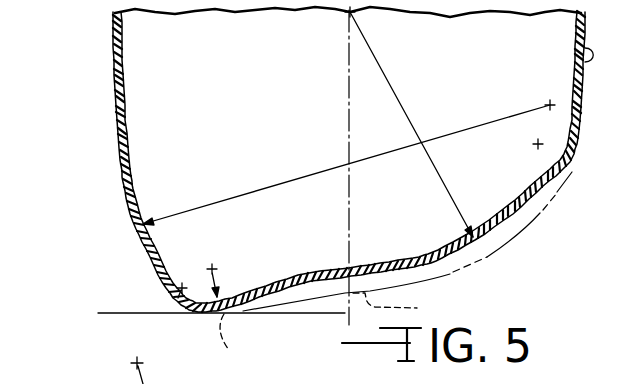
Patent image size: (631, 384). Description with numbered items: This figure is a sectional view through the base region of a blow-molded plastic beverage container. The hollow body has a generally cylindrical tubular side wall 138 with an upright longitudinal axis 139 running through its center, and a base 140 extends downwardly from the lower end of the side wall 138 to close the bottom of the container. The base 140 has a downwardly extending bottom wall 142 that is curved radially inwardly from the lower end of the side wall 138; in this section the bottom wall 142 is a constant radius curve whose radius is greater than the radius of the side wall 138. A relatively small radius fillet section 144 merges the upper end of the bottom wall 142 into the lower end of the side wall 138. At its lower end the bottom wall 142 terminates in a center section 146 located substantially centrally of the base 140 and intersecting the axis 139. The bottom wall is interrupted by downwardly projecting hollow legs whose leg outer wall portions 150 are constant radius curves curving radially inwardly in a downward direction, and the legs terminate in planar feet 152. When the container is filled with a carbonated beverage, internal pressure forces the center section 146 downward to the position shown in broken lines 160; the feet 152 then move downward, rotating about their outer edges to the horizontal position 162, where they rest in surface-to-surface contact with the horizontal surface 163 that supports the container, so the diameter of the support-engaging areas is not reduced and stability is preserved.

The tubular side wall 138 is at (114, 107).
The longitudinal axis 139 is at (348, 138).
The base 140 is at (503, 263).
The bottom wall 142 is at (563, 153).
The fillet section 144 is at (567, 139).
The center section 146 is at (350, 268).
The leg outer wall portions 150 is at (138, 242).
The feet 152 is at (197, 303).
The broken lines 160 is at (410, 302).
The horizontal position 162 is at (250, 339).
The horizontal surface 163 is at (100, 313).